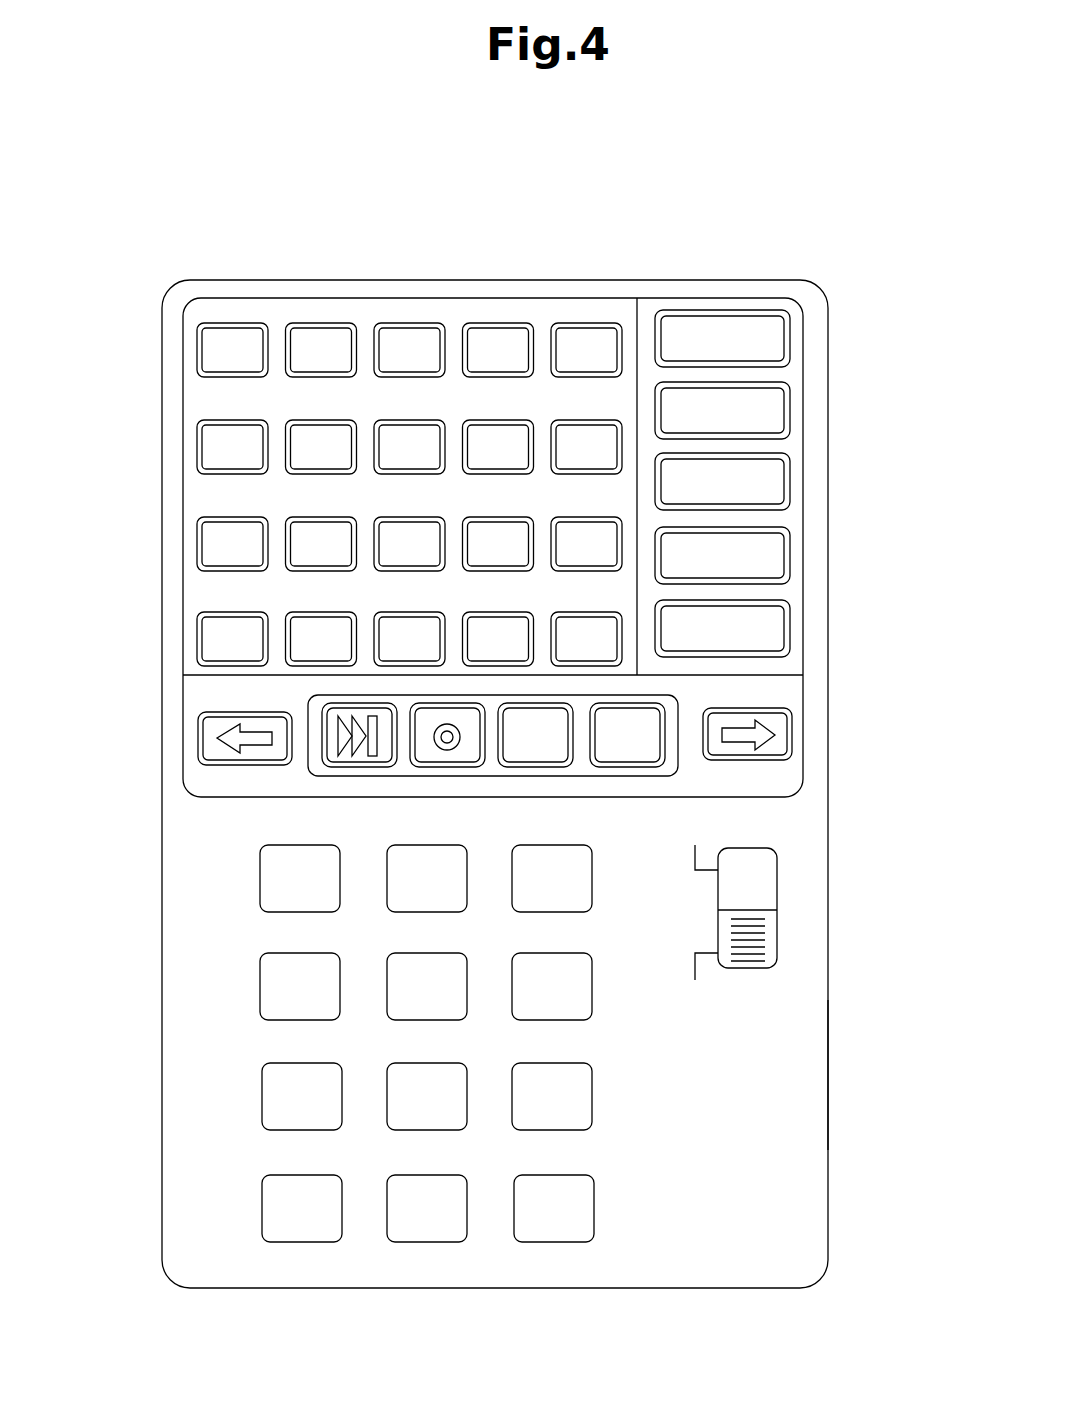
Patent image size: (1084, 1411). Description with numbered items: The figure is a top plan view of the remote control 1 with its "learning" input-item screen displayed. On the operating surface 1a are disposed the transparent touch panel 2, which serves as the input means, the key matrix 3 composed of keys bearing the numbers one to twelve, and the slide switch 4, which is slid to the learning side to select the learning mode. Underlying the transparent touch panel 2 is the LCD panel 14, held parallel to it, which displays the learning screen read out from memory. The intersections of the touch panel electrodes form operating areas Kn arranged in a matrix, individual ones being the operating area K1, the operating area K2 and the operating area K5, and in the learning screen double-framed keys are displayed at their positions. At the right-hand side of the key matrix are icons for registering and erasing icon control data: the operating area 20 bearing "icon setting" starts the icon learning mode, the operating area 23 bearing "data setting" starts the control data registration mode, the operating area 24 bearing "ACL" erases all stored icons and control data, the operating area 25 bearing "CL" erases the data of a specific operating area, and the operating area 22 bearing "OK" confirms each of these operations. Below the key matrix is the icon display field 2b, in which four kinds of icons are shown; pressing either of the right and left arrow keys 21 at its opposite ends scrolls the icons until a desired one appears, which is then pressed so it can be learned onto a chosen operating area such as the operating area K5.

The remote control transmission apparatus 1 is at (709, 244).
The operating surface 1a is at (795, 1102).
The transparent touch panel 2 is at (438, 547).
The LCD panel 14 is at (217, 492).
The icon display field 2b is at (684, 698).
The key matrix 3 is at (236, 1247).
The slide switch 4 is at (777, 907).
The operating area bearing indication "icon setting" 20 is at (778, 487).
The right and left arrow keys 21 is at (213, 728).
The operating area bearing indication "OK" 22 is at (778, 332).
The operating area bearing indication "data setting" 23 is at (778, 415).
The operating area bearing indication "ACL" 24 is at (778, 560).
The operating area bearing indication "CL" 25 is at (778, 632).
The operating areas Kn is at (409, 251).
The operating area K1 is at (237, 338).
The operating area K2 is at (333, 338).
The operating area K5 is at (586, 296).